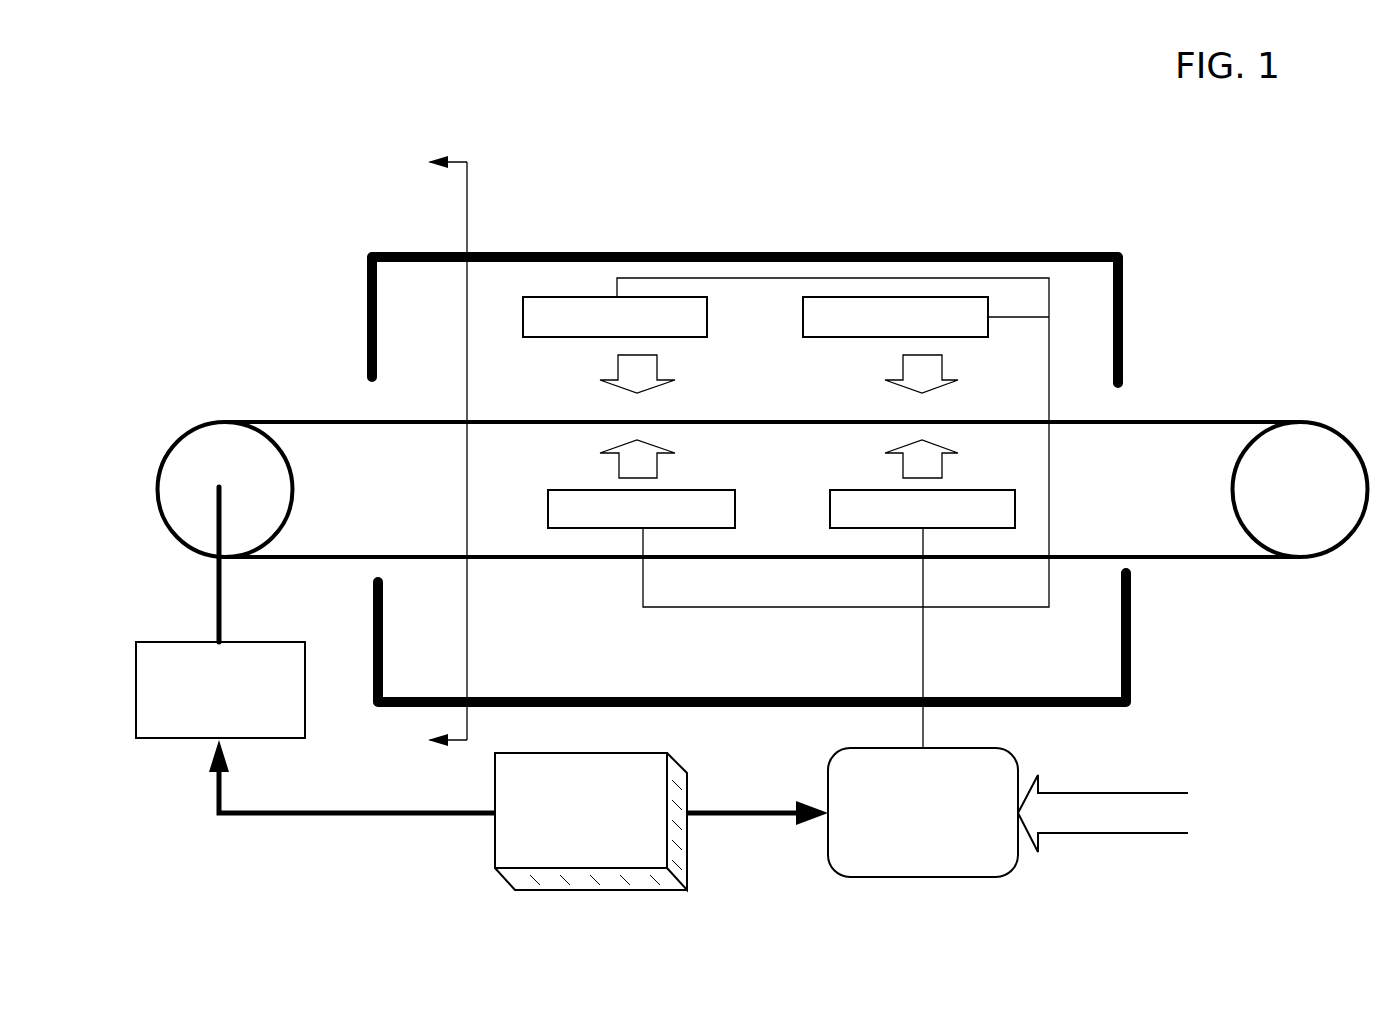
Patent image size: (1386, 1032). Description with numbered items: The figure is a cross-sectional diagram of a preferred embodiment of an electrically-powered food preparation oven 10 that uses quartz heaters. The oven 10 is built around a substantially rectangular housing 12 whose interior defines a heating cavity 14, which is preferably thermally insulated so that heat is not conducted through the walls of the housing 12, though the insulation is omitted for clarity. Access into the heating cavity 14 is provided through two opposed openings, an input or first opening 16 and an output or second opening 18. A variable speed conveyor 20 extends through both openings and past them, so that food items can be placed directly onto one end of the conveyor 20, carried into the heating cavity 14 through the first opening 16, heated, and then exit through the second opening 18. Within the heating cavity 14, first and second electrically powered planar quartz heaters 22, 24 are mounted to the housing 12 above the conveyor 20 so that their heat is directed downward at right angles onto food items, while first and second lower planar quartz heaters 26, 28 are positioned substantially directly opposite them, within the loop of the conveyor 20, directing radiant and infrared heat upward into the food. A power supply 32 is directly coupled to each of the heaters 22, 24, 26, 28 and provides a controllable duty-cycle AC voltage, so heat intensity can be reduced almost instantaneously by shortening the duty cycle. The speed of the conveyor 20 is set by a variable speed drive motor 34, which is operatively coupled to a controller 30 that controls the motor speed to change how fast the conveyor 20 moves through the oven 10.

The food preparation oven 10 is at (960, 135).
The housing 12 is at (795, 252).
The heating cavity 14 is at (483, 446).
The first opening 16 is at (350, 393).
The second opening 18 is at (1152, 393).
The variable speed conveyor 20 is at (1208, 412).
The first upper planar quartz heater 22 is at (568, 338).
The second upper planar quartz heater 24 is at (852, 338).
The first lower planar quartz heater 26 is at (548, 508).
The second lower planar quartz heater 28 is at (830, 508).
The controller 30 is at (492, 842).
The power supply 32 is at (1017, 826).
The variable speed drive motor 34 is at (192, 739).